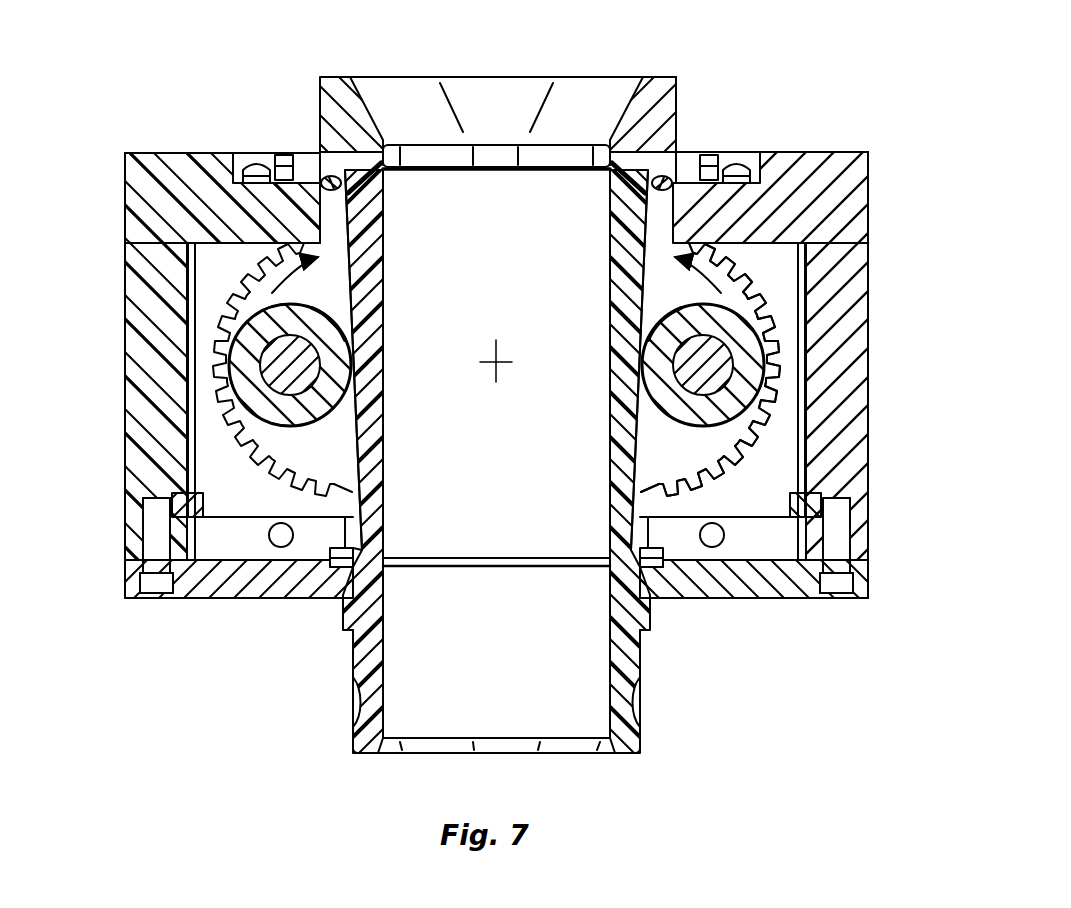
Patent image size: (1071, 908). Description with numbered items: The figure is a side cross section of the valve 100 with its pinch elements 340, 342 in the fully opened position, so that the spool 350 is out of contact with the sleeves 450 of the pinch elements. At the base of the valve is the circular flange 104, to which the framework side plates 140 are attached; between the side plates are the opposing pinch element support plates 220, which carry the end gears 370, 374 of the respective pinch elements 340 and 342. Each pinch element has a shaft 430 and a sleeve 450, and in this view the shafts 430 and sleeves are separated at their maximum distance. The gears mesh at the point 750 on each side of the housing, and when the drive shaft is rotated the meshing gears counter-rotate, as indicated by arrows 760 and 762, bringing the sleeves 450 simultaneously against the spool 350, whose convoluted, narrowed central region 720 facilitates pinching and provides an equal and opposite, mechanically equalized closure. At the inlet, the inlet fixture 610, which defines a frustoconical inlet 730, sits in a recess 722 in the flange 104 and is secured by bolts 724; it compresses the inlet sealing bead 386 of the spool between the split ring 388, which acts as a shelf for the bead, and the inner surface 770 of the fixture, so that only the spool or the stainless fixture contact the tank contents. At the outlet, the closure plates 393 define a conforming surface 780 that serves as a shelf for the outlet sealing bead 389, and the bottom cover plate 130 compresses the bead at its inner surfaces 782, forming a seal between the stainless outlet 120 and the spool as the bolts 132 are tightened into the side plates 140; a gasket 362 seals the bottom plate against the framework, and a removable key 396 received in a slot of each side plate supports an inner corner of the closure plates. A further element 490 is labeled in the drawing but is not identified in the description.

The valve 100 is at (809, 58).
The circular flange 104 is at (869, 160).
The valve outlet 120 is at (644, 676).
The bottom cover plate 130 is at (223, 600).
The bolt holes/bolts 132 is at (156, 600).
The framework side plate 140 is at (148, 403).
The pinch element support plates 220 is at (767, 505).
The pinch element 340 is at (215, 305).
The pinch element 342 is at (788, 306).
The spool 350 is at (612, 208).
The gasket 362 is at (187, 578).
The end gear 370 is at (343, 466).
The end gear 374 is at (705, 306).
The inlet sealing bead 386 is at (332, 165).
The split ring 388 is at (288, 152).
The outlet sealing bead 389 is at (350, 565).
The closure plate 393 is at (303, 587).
The removable key 396 is at (205, 505).
The pinch element shaft 430 is at (317, 398).
The sleeve 450 is at (352, 310).
The bearing 490 is at (355, 373).
The inlet fixture 610 is at (680, 128).
The convoluted central region 720 is at (396, 334).
The recess 722 is at (246, 146).
The bolts 724 is at (258, 162).
The frustoconical inlet 730 is at (514, 88).
The meshing point 750 is at (502, 356).
The arrow 760 is at (335, 318).
The arrow 762 is at (773, 230).
The inner surface 770 is at (337, 158).
The conforming surface 780 is at (340, 528).
The inner surfaces 782 is at (330, 578).